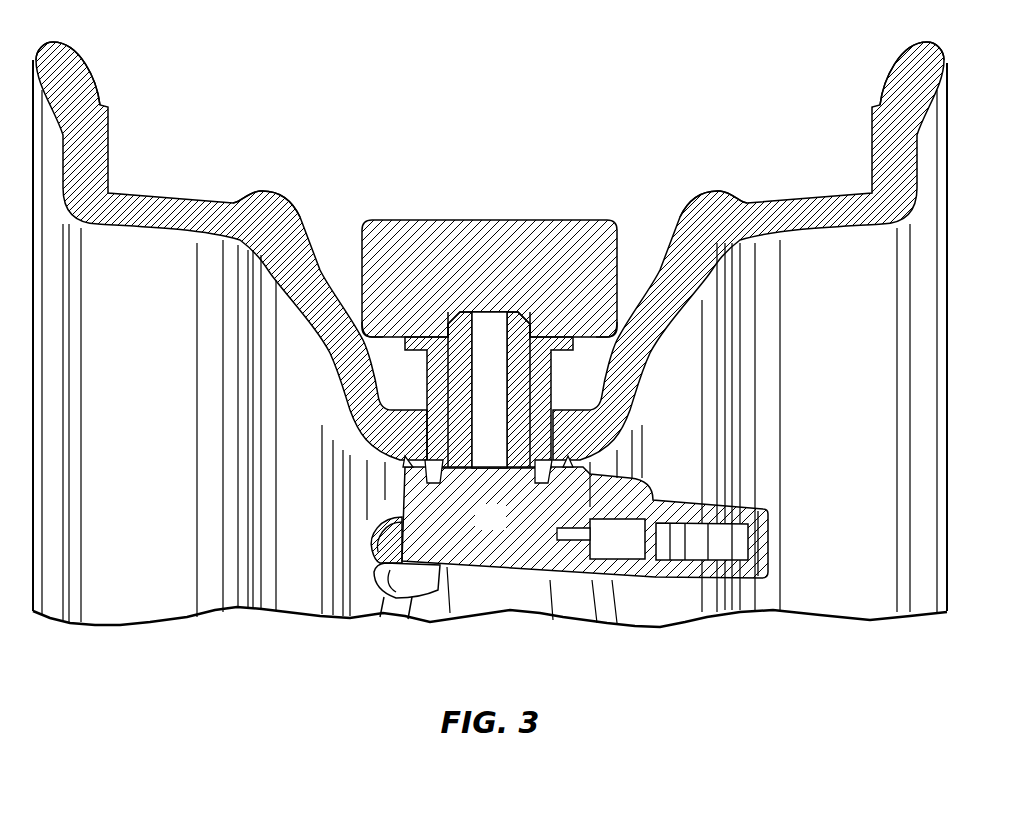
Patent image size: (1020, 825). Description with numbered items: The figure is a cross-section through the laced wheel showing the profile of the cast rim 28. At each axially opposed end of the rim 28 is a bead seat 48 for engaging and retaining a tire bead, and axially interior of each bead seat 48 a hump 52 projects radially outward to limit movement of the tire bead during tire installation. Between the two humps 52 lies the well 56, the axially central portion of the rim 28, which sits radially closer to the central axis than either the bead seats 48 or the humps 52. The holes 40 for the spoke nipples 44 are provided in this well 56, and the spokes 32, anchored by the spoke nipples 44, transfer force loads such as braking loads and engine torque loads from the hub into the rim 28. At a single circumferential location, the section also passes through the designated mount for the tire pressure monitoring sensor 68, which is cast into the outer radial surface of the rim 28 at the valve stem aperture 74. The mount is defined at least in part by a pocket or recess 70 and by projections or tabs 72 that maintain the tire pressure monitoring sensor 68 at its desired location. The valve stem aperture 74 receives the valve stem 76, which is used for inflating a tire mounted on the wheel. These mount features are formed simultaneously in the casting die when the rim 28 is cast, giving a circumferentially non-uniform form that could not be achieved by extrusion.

The rim 28 is at (180, 215).
The spoke 32 is at (402, 595).
The hole 40 is at (383, 517).
The spoke nipple 44 is at (380, 560).
The bead seat 48 is at (108, 102).
The hump 52 is at (280, 192).
The well 56 is at (480, 297).
The tire pressure monitoring sensor 68 is at (486, 242).
The pocket or recess 70 is at (385, 342).
The projection or tab 72 is at (363, 318).
The valve stem aperture 74 is at (512, 432).
The valve stem 76 is at (502, 528).